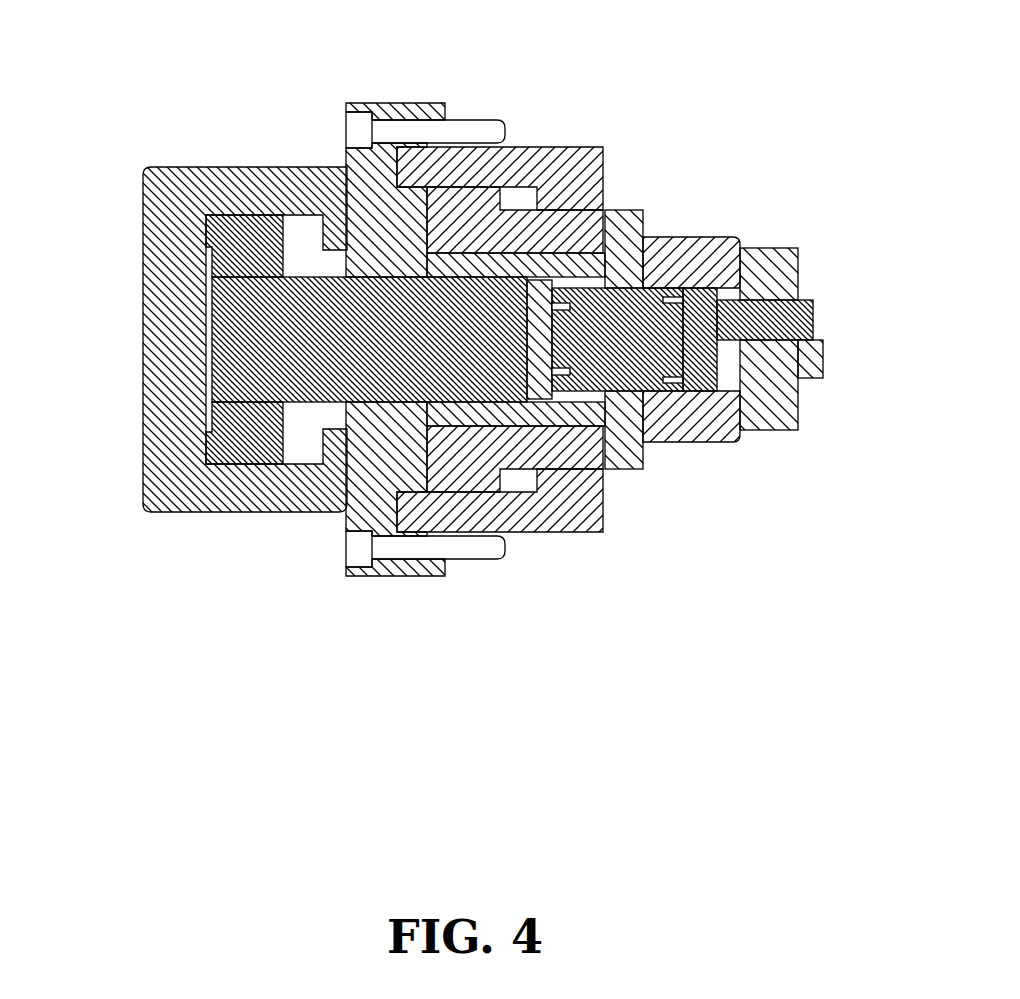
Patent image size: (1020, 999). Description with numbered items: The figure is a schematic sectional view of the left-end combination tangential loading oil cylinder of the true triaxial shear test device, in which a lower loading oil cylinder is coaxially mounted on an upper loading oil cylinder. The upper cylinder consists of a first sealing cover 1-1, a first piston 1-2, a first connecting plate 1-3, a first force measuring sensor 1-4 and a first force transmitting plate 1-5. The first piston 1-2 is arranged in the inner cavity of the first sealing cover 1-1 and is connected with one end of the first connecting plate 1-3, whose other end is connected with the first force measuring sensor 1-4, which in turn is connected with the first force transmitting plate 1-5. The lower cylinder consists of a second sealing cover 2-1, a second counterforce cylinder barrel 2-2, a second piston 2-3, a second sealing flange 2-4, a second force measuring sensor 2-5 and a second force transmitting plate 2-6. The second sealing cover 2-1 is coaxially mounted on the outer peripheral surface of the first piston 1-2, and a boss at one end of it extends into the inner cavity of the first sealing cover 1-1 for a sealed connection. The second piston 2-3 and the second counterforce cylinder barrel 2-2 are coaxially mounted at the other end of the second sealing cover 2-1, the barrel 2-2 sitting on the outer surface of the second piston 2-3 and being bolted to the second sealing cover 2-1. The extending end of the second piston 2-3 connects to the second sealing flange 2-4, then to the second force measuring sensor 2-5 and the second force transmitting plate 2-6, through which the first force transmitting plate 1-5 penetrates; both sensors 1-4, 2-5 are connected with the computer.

The first sealing cover 1-1 is at (178, 302).
The first piston 1-2 is at (255, 287).
The first connecting plate 1-3 is at (577, 272).
The first force measuring sensor 1-4 is at (623, 330).
The first force transmitting plate 1-5 is at (812, 308).
The second sealing cover 2-1 is at (362, 203).
The second counterforce cylinder barrel 2-2 is at (513, 147).
The second piston 2-3 is at (547, 440).
The second sealing flange 2-4 is at (630, 468).
The second force measuring sensor 2-5 is at (707, 440).
The second force transmitting plate 2-6 is at (776, 272).